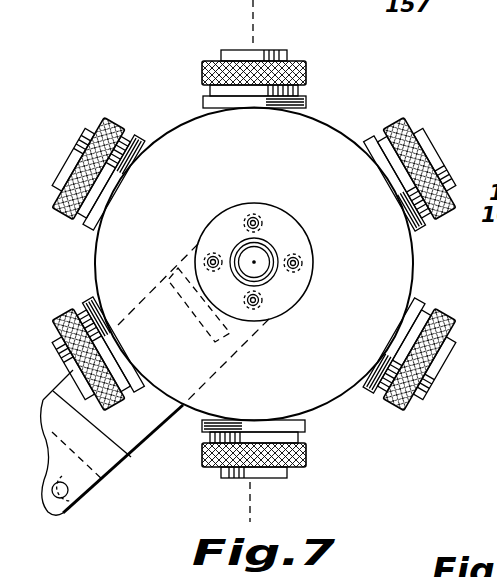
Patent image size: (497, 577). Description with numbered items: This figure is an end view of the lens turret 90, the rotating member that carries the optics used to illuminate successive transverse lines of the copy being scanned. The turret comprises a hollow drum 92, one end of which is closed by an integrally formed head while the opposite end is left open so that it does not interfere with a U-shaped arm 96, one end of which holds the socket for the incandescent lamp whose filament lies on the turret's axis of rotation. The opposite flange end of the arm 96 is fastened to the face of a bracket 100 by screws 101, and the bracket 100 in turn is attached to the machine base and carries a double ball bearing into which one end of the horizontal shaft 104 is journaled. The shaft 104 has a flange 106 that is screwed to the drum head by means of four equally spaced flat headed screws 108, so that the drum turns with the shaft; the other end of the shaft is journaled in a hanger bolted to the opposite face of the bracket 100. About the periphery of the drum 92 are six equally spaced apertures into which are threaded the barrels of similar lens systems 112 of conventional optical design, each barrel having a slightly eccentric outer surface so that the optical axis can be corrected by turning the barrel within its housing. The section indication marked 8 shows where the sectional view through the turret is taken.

The section line of FIG. 8 is at (240, 15).
The turret head assembly 90 is at (253, 264).
The turret disc 92 is at (403, 250).
The tool holder bar 96 is at (143, 427).
The tool holder end block 100 is at (62, 514).
The tool bit 101 is at (67, 490).
The central bore 104 is at (256, 260).
The hub plate 106 is at (273, 217).
The screws 108 is at (215, 257).
The knurled clamping knobs 112 is at (380, 137).